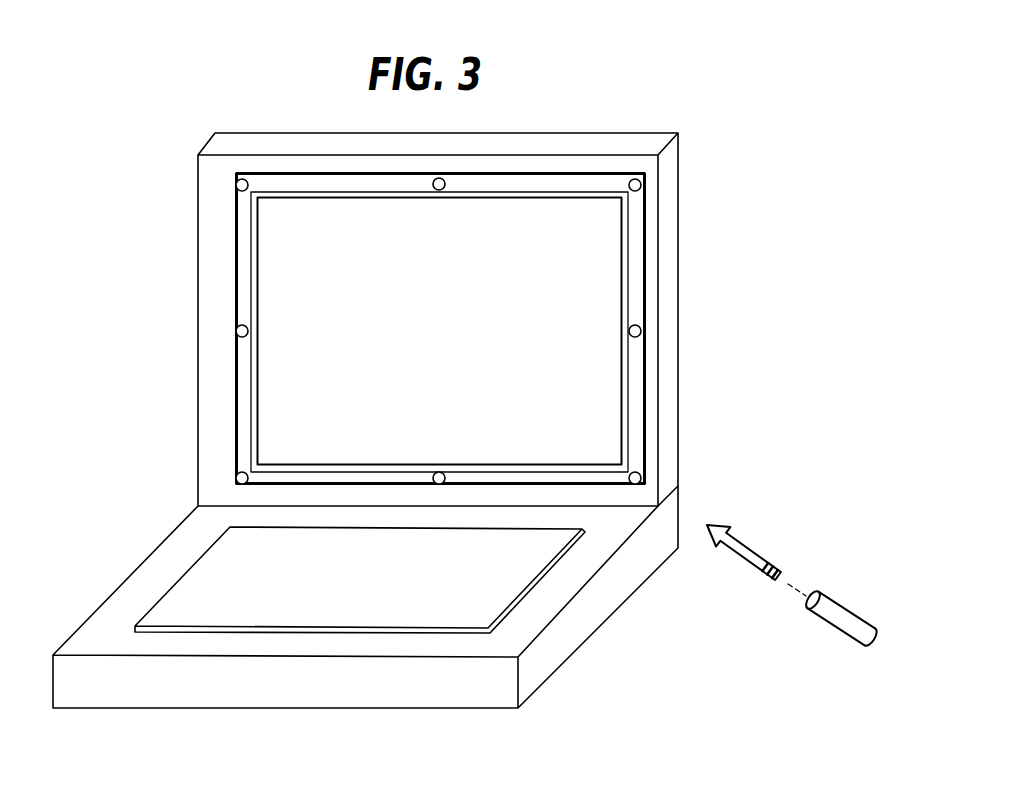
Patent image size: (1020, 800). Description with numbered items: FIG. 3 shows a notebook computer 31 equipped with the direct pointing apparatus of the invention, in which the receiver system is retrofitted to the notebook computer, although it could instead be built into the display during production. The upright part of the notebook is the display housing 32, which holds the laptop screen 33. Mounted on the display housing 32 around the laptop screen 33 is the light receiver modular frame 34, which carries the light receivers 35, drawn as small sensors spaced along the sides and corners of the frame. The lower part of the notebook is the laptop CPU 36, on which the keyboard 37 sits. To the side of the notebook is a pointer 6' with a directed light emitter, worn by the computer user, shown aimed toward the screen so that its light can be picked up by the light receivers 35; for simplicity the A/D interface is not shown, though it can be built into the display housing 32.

The notebook computer 31 is at (704, 149).
The display housing 32 is at (680, 220).
The laptop screen 33 is at (607, 405).
The light receiver modular frame 34 is at (647, 277).
The light receivers 35 is at (236, 185).
The laptop CPU 36 is at (167, 687).
The keyboard 37 is at (523, 560).
The pointer 6' is at (824, 585).